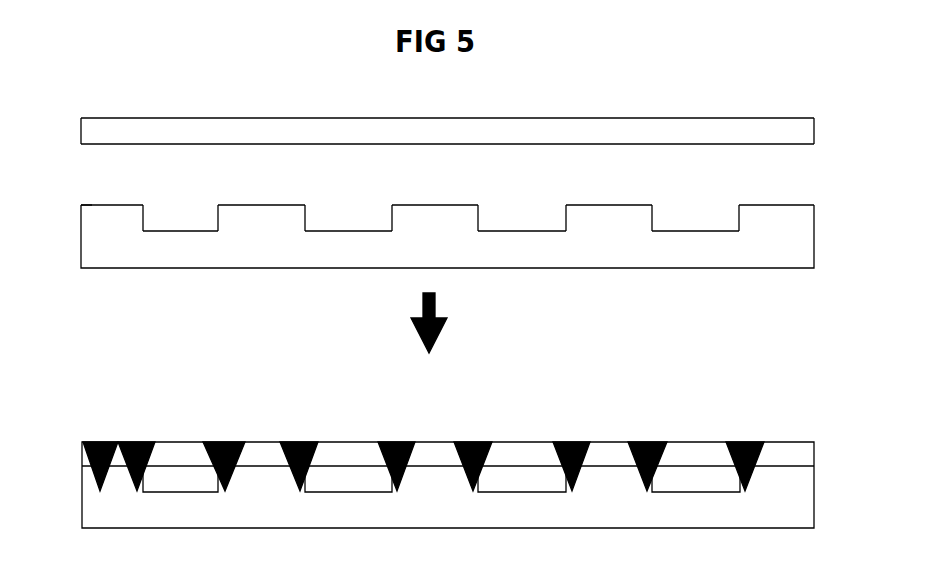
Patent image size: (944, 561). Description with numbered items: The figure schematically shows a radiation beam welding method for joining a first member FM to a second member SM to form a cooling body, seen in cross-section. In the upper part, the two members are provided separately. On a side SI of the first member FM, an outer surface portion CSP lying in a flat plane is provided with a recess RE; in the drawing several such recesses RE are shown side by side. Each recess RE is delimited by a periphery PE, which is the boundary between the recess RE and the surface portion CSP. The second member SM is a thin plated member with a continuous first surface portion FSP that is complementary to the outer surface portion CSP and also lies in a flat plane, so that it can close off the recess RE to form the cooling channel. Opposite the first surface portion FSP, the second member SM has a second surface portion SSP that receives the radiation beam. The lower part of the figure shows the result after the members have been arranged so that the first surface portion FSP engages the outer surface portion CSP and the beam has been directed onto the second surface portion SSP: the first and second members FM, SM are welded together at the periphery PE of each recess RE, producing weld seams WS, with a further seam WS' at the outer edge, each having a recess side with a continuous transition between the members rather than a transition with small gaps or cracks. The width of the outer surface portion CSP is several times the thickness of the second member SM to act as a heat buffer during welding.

The second member SM is at (95, 131).
The second surface portion SSP is at (301, 116).
The first surface portion FSP is at (797, 146).
The first member FM is at (800, 243).
The outer surface portion CSP is at (115, 203).
The periphery PE is at (150, 204).
The recess RE is at (184, 219).
The side SI is at (91, 203).
The weld seam WS is at (441, 429).
The weld seam at edge WS' is at (94, 436).